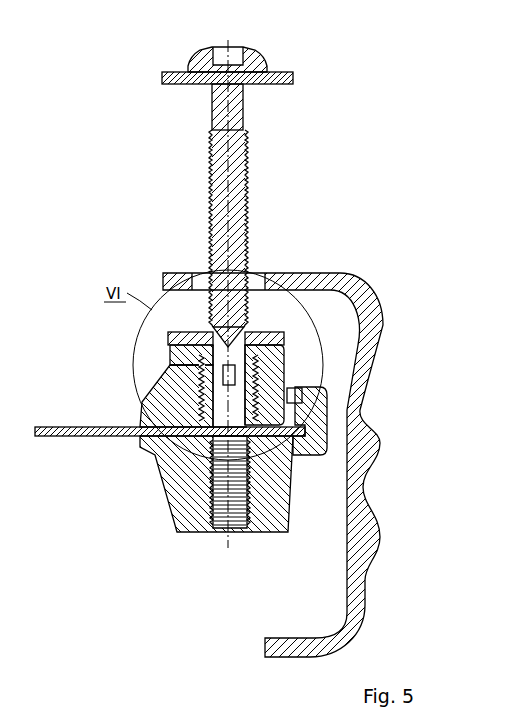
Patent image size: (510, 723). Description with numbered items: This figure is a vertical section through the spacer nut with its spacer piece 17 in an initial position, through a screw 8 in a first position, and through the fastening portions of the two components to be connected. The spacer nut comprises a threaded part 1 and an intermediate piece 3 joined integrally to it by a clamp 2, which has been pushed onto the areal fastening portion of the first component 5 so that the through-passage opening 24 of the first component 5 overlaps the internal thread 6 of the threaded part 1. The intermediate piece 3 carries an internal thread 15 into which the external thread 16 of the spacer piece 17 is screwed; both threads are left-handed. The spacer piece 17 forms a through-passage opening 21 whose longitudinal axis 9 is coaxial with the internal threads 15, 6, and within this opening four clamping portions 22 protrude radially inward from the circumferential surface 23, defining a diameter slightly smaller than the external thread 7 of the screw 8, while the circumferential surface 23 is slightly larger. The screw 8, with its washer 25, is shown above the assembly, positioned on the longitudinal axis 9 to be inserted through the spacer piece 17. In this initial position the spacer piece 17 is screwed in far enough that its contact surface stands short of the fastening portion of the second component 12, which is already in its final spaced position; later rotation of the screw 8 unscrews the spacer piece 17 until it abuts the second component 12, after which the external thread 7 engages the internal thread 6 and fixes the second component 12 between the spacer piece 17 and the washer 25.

The threaded part 1 is at (272, 505).
The clamp 2 is at (318, 420).
The intermediate piece 3 is at (270, 372).
The first component 5 is at (48, 437).
The internal thread 6 is at (223, 516).
The external thread 7 is at (250, 212).
The screw 8 is at (245, 125).
The longitudinal axis 9 is at (230, 42).
The second component 12 is at (363, 292).
The internal thread 15 is at (151, 389).
The external thread 16 is at (193, 362).
The spacer piece 17 is at (283, 340).
The through-passage opening 21 is at (220, 413).
The clamping portions 22 is at (224, 382).
The circumferential surface 23 is at (220, 352).
The through-passage opening 24 is at (216, 434).
The washer 25 is at (290, 79).